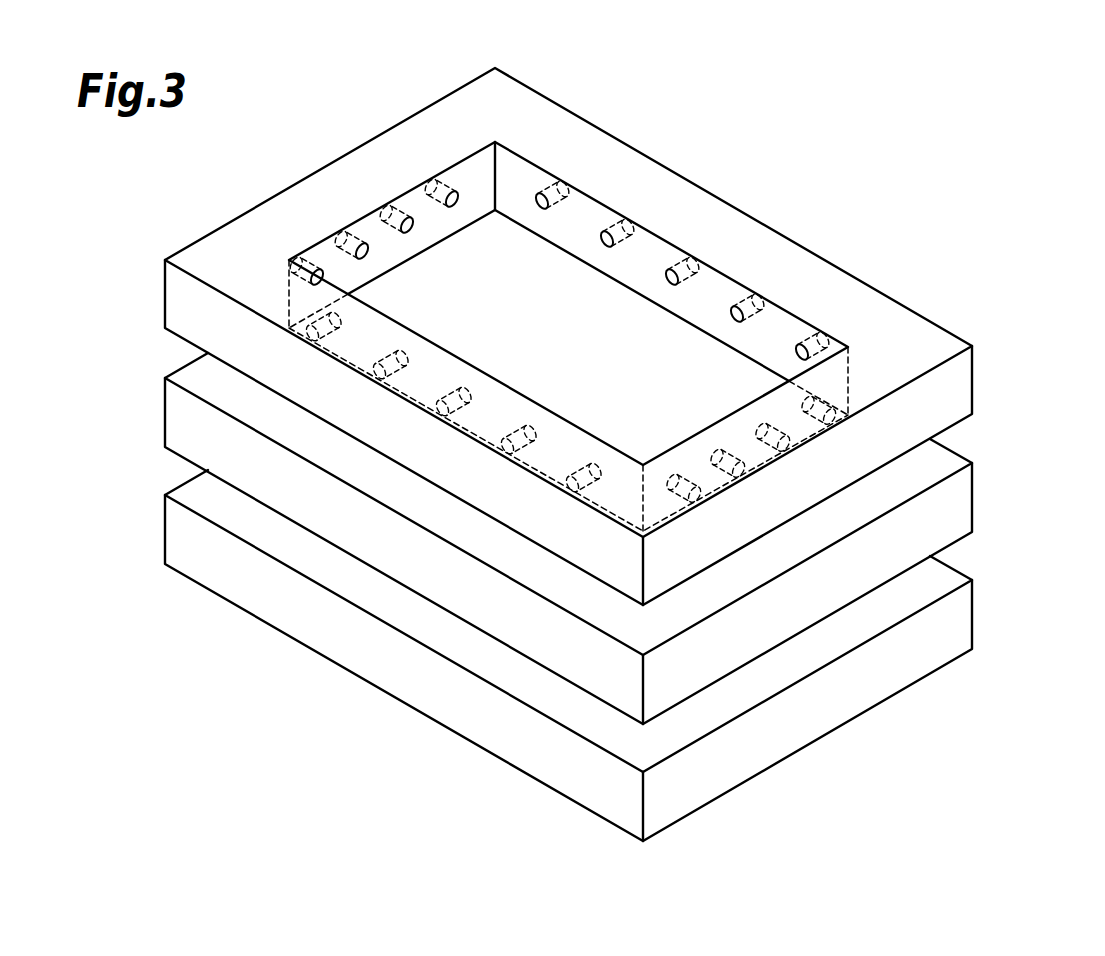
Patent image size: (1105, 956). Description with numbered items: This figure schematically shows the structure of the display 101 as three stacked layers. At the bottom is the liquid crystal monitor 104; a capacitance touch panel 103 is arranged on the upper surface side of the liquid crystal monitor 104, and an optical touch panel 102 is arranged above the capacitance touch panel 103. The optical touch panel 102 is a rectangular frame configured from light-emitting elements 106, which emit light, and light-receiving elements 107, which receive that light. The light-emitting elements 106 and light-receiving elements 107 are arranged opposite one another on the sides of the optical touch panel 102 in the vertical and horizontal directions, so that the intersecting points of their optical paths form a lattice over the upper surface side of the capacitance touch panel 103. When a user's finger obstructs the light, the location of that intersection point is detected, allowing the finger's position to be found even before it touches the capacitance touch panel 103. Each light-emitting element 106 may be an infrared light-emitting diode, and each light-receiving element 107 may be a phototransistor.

The display 101 is at (821, 156).
The optical touch panel 102 is at (973, 383).
The capacitance touch panel 103 is at (973, 500).
The liquid crystal monitor 104 is at (973, 622).
The light-emitting element 106 is at (606, 226).
The light-receiving element 107 is at (405, 196).